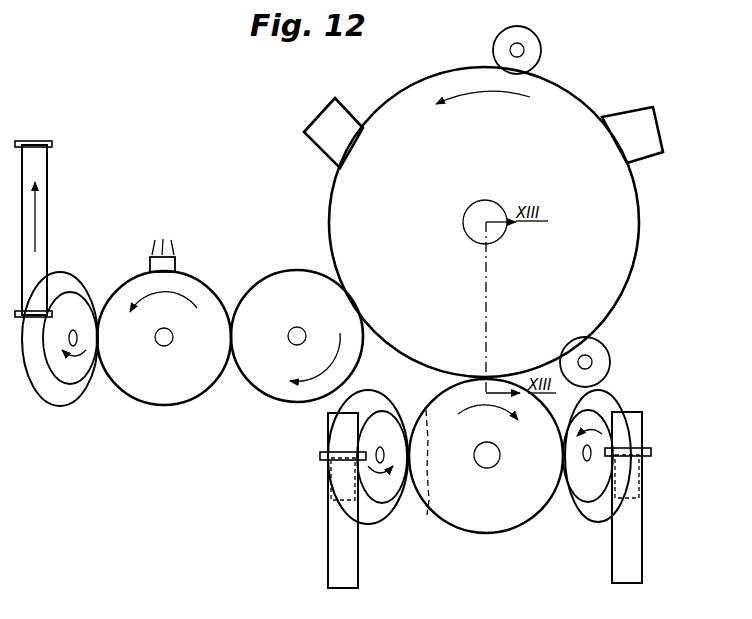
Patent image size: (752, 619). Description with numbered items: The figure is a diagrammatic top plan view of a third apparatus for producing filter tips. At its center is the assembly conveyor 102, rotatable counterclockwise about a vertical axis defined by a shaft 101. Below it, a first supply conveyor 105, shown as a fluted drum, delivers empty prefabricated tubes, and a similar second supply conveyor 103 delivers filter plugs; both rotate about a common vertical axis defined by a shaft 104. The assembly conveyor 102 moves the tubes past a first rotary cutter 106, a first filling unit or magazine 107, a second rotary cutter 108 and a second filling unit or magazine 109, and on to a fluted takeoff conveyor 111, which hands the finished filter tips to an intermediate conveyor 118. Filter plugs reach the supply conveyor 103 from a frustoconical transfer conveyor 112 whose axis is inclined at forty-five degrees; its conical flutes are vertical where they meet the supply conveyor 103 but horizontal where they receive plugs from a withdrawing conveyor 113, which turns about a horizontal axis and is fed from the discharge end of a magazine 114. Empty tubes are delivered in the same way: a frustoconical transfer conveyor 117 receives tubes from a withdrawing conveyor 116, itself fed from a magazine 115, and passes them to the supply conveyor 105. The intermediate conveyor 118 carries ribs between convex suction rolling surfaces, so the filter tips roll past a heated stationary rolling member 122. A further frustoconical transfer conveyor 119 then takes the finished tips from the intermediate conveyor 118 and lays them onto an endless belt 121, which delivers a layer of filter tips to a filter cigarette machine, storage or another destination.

The shaft 101 is at (492, 232).
The assembly conveyor 102 is at (600, 278).
The second supply conveyor 103 is at (494, 512).
The shaft 104 is at (492, 460).
The first supply conveyor 105 is at (424, 500).
The first rotary cutter 106 is at (600, 360).
The first filling unit or magazine 107 is at (633, 122).
The second rotary cutter 108 is at (538, 58).
The second filling unit or magazine 109 is at (338, 123).
The takeoff conveyor 111 is at (258, 292).
The frustoconical transfer conveyor 112 is at (600, 405).
The withdrawing conveyor 113 is at (628, 433).
The magazine 114 is at (620, 560).
The magazine 115 is at (340, 542).
The withdrawing conveyor 116 is at (338, 434).
The frustoconical transfer conveyor 117 is at (374, 522).
The intermediate conveyor 118 is at (190, 290).
The frustoconical transfer conveyor 119 is at (70, 300).
The endless belt 121 is at (45, 182).
The stationary rolling member 122 is at (162, 262).